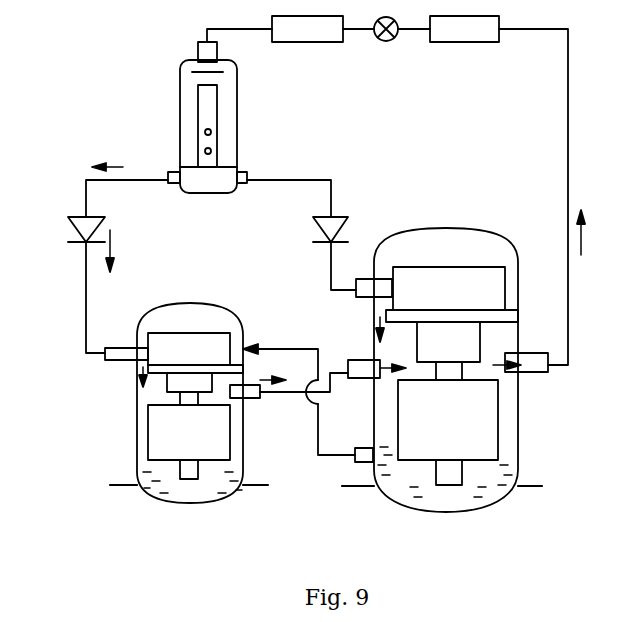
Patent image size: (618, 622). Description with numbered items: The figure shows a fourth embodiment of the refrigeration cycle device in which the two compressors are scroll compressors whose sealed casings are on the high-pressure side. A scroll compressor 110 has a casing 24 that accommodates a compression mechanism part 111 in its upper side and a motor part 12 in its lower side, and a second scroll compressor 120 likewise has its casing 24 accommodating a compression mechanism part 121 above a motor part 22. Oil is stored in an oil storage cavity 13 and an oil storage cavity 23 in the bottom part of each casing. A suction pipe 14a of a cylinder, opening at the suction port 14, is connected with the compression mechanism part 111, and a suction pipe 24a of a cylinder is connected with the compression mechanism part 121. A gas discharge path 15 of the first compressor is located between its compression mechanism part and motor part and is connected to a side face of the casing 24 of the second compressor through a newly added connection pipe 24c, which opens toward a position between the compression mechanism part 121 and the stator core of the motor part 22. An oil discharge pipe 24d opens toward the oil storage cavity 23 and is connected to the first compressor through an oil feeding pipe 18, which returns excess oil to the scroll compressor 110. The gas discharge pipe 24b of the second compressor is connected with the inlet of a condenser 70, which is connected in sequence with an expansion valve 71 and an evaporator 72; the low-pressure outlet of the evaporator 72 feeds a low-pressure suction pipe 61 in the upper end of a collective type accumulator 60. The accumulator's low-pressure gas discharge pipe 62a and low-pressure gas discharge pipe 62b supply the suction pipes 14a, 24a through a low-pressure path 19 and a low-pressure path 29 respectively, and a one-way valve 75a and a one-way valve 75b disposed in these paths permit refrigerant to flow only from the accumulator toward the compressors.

The motor part 12 is at (148, 430).
The oil storage cavity 13 is at (222, 497).
The suction port 14 is at (137, 392).
The suction pipe 14a is at (105, 357).
The gas discharge path 15 is at (283, 398).
The oil feeding pipe 18 is at (299, 349).
The low-pressure path 19 is at (86, 287).
The motor part 22 is at (497, 430).
The oil storage cavity 23 is at (490, 502).
The casing 24 is at (518, 268).
The suction pipe 24a is at (360, 297).
The gas discharge pipe 24b is at (532, 353).
The connection pipe 24c is at (355, 378).
The oil discharge pipe 24d is at (357, 462).
The low-pressure path 29 is at (331, 283).
The collective type accumulator 60 is at (180, 93).
The low-pressure suction pipe 61 is at (198, 52).
The low-pressure gas discharge pipe 62a is at (168, 176).
The low-pressure gas discharge pipe 62b is at (247, 176).
The condenser 70 is at (464, 42).
The expansion valve 71 is at (389, 41).
The evaporator 72 is at (310, 43).
The one-way valve 75a is at (68, 222).
The one-way valve 75b is at (313, 222).
The scroll compressor 110 is at (193, 416).
The compression mechanism part 111 is at (228, 335).
The scroll compressor 120 is at (433, 364).
The compression mechanism part 121 is at (480, 267).